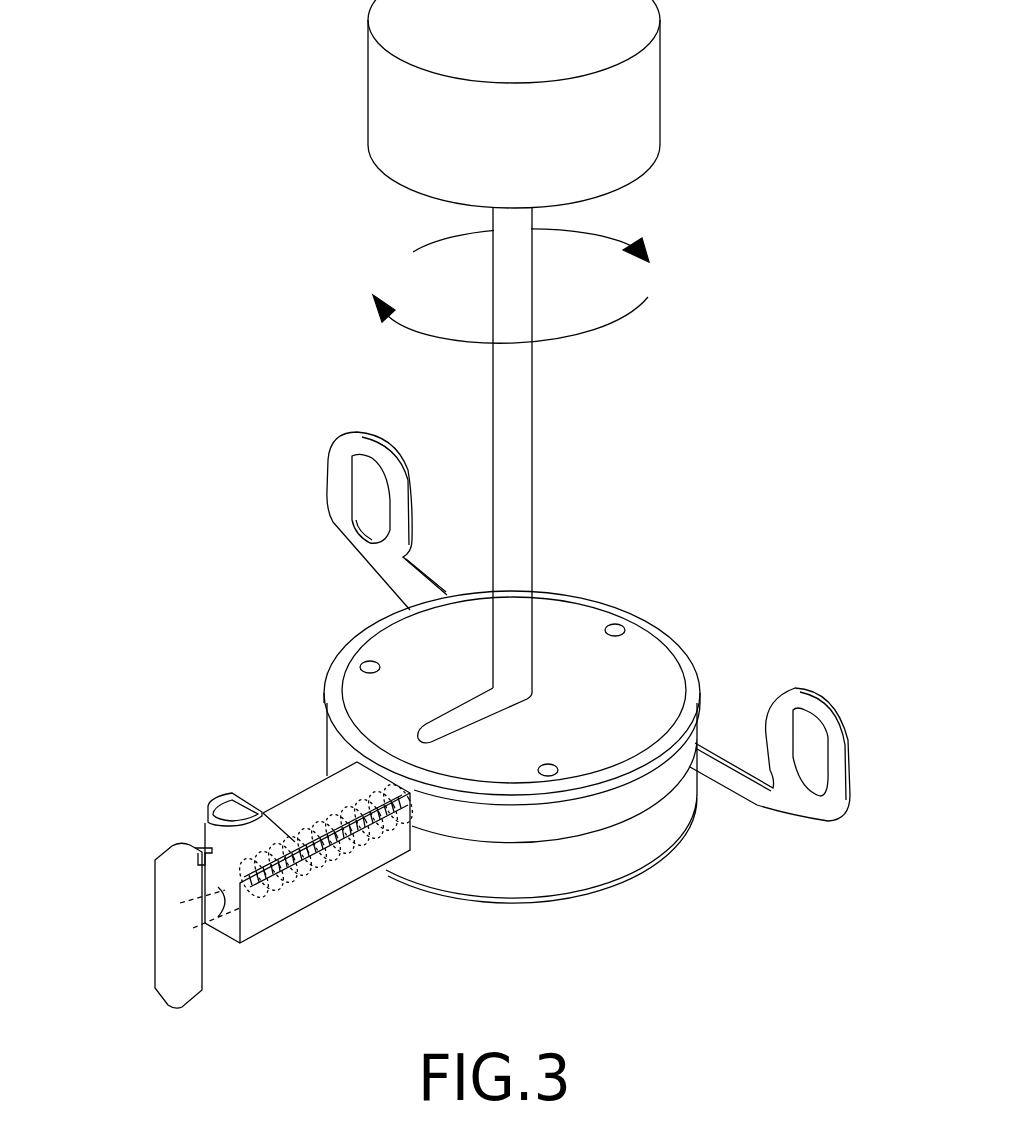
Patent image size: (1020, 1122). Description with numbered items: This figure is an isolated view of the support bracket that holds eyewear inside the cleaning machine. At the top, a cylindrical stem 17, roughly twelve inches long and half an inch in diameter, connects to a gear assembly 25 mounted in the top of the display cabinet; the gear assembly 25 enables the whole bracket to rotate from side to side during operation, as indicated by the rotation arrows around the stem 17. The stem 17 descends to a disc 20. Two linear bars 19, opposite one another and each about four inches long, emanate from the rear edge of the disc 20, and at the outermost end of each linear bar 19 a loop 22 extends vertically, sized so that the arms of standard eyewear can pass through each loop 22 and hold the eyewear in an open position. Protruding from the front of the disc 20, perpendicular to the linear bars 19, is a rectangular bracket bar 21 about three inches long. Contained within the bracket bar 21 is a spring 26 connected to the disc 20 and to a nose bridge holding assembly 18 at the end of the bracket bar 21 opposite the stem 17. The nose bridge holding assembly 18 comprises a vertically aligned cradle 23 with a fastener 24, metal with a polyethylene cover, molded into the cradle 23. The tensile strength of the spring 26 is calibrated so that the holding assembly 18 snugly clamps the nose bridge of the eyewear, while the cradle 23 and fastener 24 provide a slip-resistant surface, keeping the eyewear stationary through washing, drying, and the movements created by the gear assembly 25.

The stem 17 is at (513, 448).
The nose bridge holding assembly 18 is at (250, 940).
The linear bars 19 is at (445, 598).
The disc 20 is at (397, 657).
The bracket bar 21 is at (315, 797).
The loop 22 is at (357, 447).
The cradle 23 is at (197, 837).
The fastener 24 is at (228, 837).
The gear assembly 25 is at (482, 165).
The spring 26 is at (302, 873).